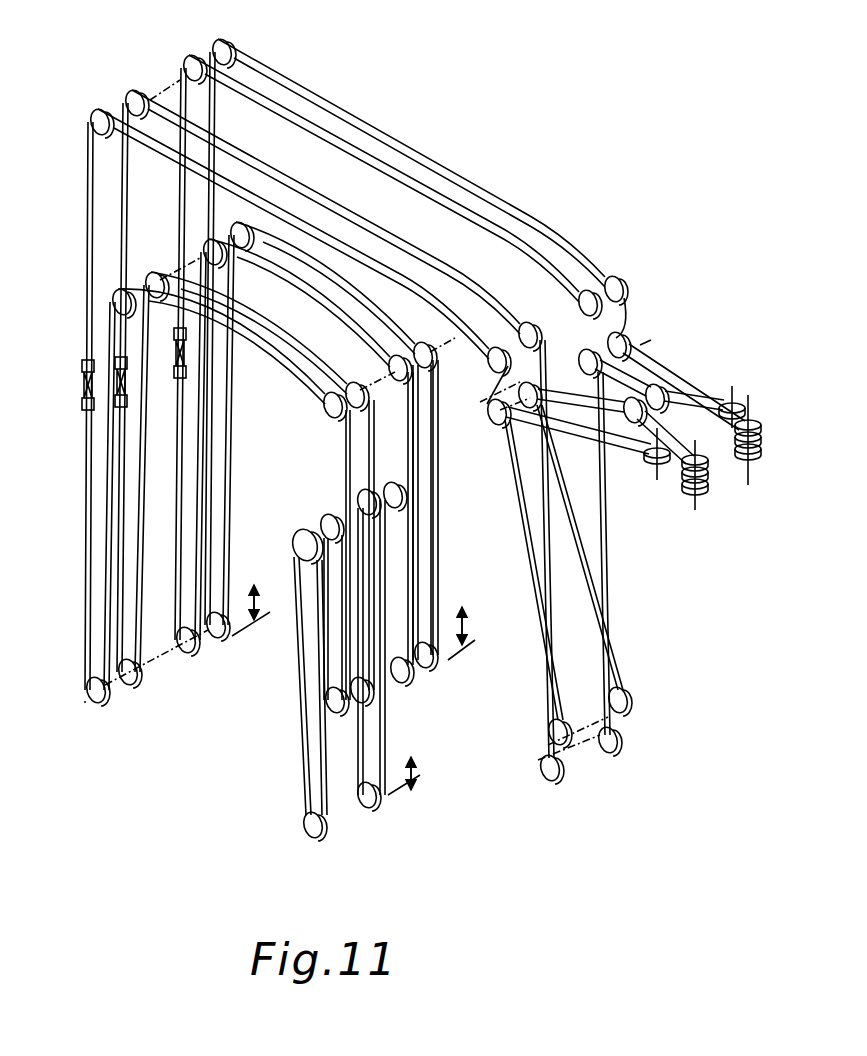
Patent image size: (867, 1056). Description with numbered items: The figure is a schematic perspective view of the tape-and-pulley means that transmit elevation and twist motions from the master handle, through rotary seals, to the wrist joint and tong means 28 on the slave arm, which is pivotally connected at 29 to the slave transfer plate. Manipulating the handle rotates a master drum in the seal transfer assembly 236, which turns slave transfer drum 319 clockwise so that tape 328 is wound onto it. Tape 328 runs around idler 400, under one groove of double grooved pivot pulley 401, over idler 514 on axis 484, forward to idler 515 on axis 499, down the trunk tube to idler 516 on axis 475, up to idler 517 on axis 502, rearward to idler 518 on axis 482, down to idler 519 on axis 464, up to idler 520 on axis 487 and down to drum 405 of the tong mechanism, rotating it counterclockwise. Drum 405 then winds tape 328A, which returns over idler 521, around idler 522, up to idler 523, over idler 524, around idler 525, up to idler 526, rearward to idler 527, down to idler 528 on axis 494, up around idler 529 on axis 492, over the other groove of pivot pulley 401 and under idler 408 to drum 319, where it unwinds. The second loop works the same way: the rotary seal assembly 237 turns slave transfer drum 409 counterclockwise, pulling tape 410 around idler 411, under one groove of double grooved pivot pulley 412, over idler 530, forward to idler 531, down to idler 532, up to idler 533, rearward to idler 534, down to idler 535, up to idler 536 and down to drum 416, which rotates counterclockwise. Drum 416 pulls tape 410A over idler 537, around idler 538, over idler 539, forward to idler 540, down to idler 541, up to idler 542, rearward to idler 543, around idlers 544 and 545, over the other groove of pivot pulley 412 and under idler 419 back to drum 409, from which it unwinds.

The wrist joint and tong means 28 is at (282, 836).
The pivotal connection 29 is at (652, 338).
The seal transfer assembly 236 is at (750, 475).
The rotary seal assembly 237 is at (692, 504).
The slave transfer drum 319 is at (760, 428).
The tape 328 is at (399, 152).
The tape 328A is at (376, 166).
The idler 400 is at (738, 402).
The double grooved pivot pulley 401 is at (630, 340).
The drum 405 is at (367, 810).
The idler 408 is at (666, 390).
The slave transfer drum 409 is at (706, 478).
The tape 410 is at (345, 259).
The tape 410A is at (400, 252).
The idler 411 is at (650, 462).
The double grooved pivot pulley 412 is at (538, 403).
The drum 416 is at (308, 838).
The idler 419 is at (638, 400).
The axis 464 is at (458, 630).
The axis 475 is at (87, 704).
The axis 482 is at (320, 410).
The axis 484 is at (630, 288).
The axis 487 is at (433, 470).
The axis 492 is at (634, 704).
The axis 494 is at (636, 744).
The axis 499 is at (236, 46).
The axis 502 is at (262, 227).
The idler 514 is at (616, 284).
The idler 515 is at (216, 46).
The idler 516 is at (219, 640).
The idler 517 is at (238, 230).
The idler 518 is at (416, 350).
The idler 519 is at (434, 664).
The idler 520 is at (392, 482).
The idler 521 is at (373, 490).
The idler 522 is at (408, 680).
The idler 523 is at (390, 368).
The idler 524 is at (222, 265).
The idler 525 is at (185, 655).
The idler 526 is at (186, 66).
The idler 527 is at (578, 302).
The idler 528 is at (612, 754).
The idler 529 is at (622, 690).
The idler 530 is at (490, 366).
The idler 531 is at (90, 121).
The idler 532 is at (104, 702).
The idler 533 is at (120, 298).
The idler 534 is at (325, 404).
The idler 535 is at (372, 700).
The idler 536 is at (296, 540).
The idler 537 is at (323, 517).
The idler 538 is at (348, 702).
The idler 539 is at (342, 386).
The idler 540 is at (157, 280).
The idler 541 is at (125, 688).
The idler 542 is at (126, 99).
The idler 543 is at (520, 332).
The idler 544 is at (550, 782).
The idler 545 is at (562, 722).